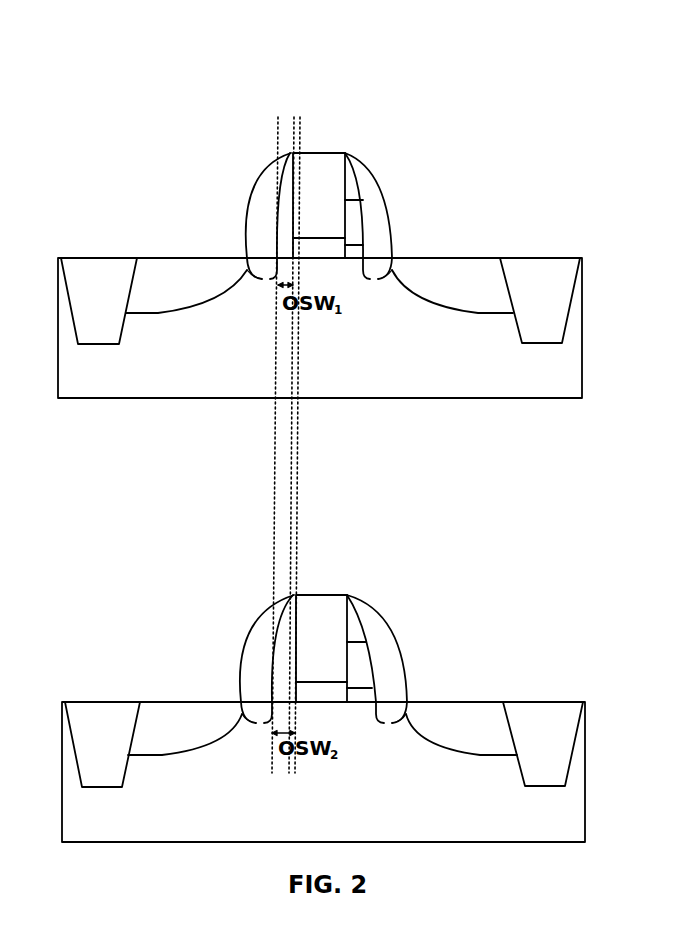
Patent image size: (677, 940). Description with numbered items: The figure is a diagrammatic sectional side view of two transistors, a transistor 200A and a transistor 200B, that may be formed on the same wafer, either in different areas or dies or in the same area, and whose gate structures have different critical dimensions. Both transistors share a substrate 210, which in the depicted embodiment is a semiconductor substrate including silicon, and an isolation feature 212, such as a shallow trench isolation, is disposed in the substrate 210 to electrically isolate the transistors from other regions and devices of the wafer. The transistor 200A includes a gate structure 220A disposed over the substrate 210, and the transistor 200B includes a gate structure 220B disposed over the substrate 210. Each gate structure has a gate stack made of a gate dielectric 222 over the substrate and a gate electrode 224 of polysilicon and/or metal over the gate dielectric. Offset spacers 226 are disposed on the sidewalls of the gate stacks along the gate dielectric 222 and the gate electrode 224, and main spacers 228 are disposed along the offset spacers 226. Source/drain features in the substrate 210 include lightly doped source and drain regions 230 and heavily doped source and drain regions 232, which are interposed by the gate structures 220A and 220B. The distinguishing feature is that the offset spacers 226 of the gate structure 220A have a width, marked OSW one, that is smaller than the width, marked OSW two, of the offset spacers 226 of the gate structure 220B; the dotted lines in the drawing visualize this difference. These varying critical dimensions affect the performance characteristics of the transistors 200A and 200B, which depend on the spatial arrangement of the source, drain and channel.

The transistor 200A is at (479, 136).
The transistor 200B is at (481, 579).
The substrate 210 is at (582, 342).
The isolation feature 212 is at (586, 292).
The gate structure 220A is at (345, 86).
The gate structure 220B is at (347, 528).
The gate dielectric 222 is at (363, 246).
The gate electrode 224 is at (363, 200).
The offset spacers 226 is at (275, 208).
The main spacers 228 is at (370, 168).
The lightly doped source and drain (LDD) regions 230 is at (260, 280).
The heavily doped source and drain (HDD) regions 232 is at (146, 314).